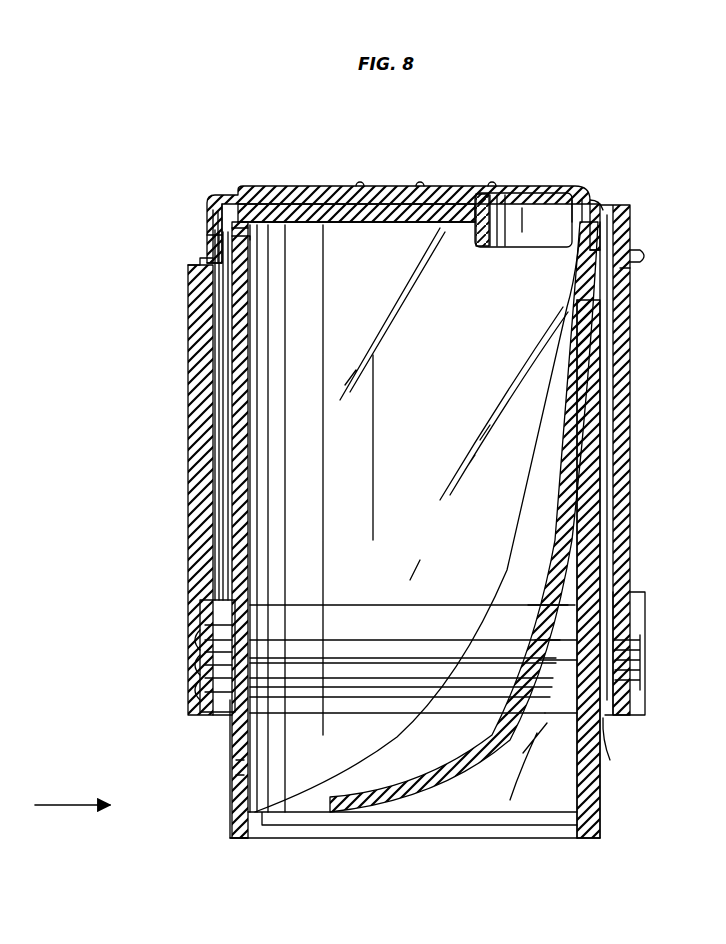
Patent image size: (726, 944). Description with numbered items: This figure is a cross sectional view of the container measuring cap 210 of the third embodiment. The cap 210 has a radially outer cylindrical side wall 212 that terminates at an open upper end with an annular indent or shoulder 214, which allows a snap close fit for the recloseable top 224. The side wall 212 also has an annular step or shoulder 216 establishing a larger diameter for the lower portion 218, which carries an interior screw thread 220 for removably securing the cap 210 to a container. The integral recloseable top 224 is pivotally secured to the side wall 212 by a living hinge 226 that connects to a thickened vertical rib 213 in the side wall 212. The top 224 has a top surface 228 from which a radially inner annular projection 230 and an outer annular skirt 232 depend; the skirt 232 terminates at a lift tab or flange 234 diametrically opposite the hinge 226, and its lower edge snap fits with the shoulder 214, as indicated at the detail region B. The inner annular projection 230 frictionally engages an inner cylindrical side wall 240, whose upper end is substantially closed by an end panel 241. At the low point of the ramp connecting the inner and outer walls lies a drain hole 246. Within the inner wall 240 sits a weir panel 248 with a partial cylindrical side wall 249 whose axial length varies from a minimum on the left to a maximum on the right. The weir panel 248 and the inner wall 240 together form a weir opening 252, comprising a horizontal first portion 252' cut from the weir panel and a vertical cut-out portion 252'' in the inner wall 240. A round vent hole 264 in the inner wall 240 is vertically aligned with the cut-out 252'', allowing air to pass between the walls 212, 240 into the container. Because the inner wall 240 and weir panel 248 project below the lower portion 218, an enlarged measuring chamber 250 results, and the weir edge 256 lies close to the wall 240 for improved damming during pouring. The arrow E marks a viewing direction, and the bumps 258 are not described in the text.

The cap 210 is at (590, 152).
The radially outer cylindrical side wall 212 is at (632, 415).
The thickened vertical rib 213 is at (190, 508).
The annular indent or shoulder 214 is at (632, 270).
The annular step or shoulder 216 is at (640, 600).
The lower portion 218 is at (645, 642).
The interior screw thread 220 is at (605, 720).
The recloseable top 224 is at (450, 185).
The living hinge 226 is at (198, 265).
The top surface 228 is at (325, 186).
The radially inner annular projection 230 is at (225, 205).
The outer annular skirt 232 is at (620, 225).
The lift tab or flange 234 is at (648, 257).
The inner cylindrical side wall 240 is at (240, 355).
The end panel 241 is at (348, 222).
The drain hole 246 is at (232, 568).
The weir panel 248 is at (393, 735).
The partial cylindrical side wall 249 is at (577, 812).
The measuring chamber 250 is at (310, 425).
The weir opening 252 is at (201, 772).
The first portion of the weir panel 252' is at (417, 523).
The vertical cut-out portion 252'' is at (194, 782).
The weir edge 256 is at (292, 825).
The protrusions 258 is at (362, 184).
The vent hole 264 is at (248, 240).
The Detail B is at (200, 235).
The view E is at (65, 805).